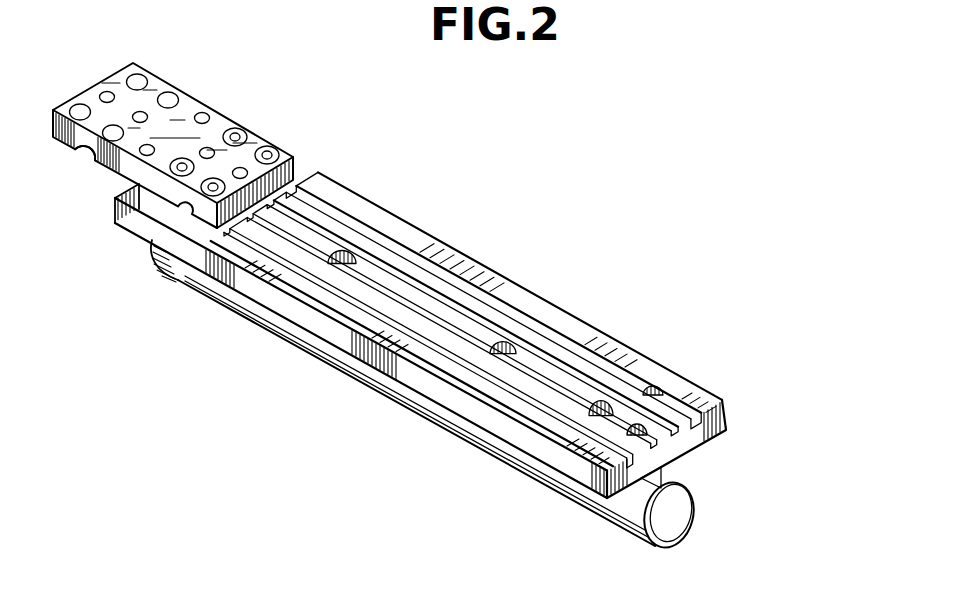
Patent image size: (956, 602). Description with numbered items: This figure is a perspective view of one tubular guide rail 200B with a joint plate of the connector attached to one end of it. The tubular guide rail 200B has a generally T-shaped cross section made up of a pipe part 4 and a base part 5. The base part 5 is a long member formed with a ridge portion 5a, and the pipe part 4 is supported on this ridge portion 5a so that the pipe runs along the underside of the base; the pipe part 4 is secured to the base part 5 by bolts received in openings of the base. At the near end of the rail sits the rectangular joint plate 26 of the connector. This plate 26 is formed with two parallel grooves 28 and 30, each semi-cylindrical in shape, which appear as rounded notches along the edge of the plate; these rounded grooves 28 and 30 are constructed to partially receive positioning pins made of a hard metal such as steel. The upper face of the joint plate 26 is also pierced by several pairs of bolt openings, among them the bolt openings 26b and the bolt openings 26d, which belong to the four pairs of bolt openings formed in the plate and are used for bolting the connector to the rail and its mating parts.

The pipe part 4 is at (676, 538).
The base part 5 is at (423, 237).
The ridge portion 5a is at (672, 470).
The joint plate 26 is at (190, 107).
The bolt openings 26b is at (272, 151).
The bolt openings 26d is at (189, 193).
The groove 28 is at (83, 157).
The groove 30 is at (182, 206).
The tubular guide rail 200B is at (640, 239).